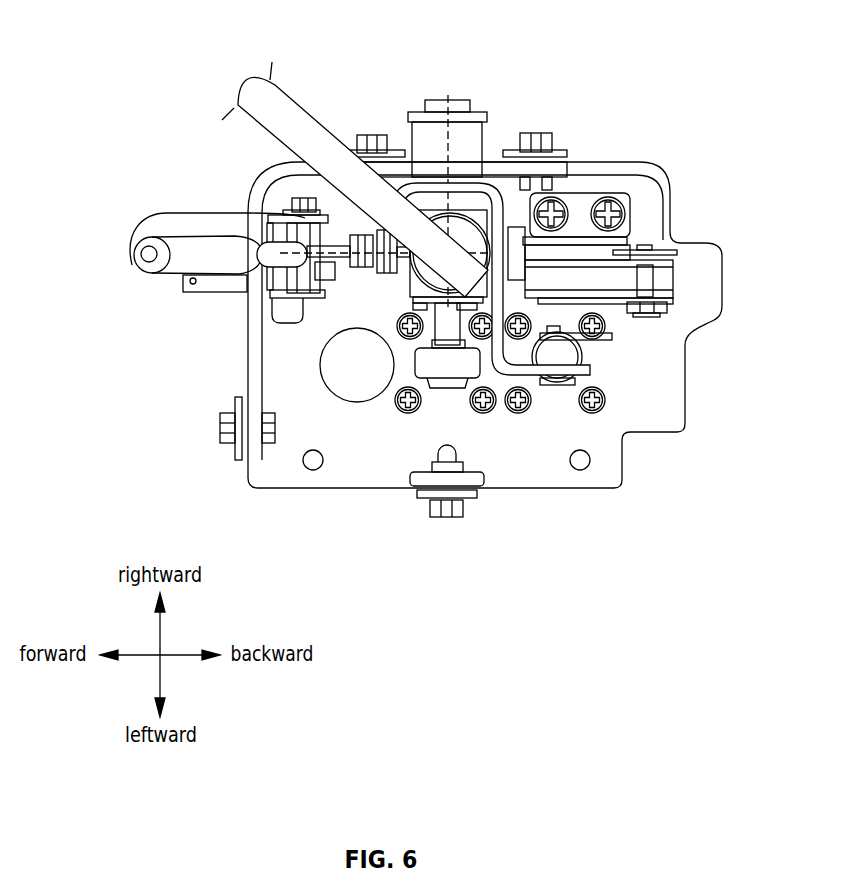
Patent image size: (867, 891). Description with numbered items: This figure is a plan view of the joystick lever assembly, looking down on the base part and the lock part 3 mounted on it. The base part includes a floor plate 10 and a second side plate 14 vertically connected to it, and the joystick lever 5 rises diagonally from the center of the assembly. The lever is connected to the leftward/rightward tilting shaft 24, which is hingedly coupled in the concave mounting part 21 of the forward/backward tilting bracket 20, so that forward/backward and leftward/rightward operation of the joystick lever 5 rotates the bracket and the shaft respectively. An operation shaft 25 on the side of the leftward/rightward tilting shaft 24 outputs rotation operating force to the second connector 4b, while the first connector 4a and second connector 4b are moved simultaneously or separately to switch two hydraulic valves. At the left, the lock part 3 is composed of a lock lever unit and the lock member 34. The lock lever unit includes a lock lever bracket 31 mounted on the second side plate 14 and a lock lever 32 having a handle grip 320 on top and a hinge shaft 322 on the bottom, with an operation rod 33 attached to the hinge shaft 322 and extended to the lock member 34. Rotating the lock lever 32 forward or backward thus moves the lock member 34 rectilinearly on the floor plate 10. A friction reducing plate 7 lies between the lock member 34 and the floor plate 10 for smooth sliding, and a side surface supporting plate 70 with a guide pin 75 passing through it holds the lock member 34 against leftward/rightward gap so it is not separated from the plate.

The lock part 3 is at (68, 480).
The joystick lever 5 is at (290, 118).
The friction reducing plate 7 is at (655, 197).
The floor plate 10 is at (342, 478).
The second side plate 14 is at (252, 452).
The forward/backward tilting bracket 20 is at (537, 325).
The concave mounting part 21 is at (472, 203).
The leftward/rightward tilting shaft 24 is at (483, 217).
The operation shaft 25 is at (443, 322).
The lock lever bracket 31 is at (273, 282).
The lock lever 32 is at (110, 303).
The operation rod 33 is at (143, 232).
The lock member 34 is at (348, 305).
The side surface supporting plate 70 is at (617, 300).
The guide pin 75 is at (643, 282).
The handle grip 320 is at (175, 270).
The hinge shaft 322 is at (278, 280).
The first connector 4a is at (607, 373).
The second connector 4b is at (476, 390).